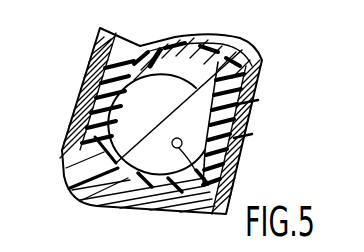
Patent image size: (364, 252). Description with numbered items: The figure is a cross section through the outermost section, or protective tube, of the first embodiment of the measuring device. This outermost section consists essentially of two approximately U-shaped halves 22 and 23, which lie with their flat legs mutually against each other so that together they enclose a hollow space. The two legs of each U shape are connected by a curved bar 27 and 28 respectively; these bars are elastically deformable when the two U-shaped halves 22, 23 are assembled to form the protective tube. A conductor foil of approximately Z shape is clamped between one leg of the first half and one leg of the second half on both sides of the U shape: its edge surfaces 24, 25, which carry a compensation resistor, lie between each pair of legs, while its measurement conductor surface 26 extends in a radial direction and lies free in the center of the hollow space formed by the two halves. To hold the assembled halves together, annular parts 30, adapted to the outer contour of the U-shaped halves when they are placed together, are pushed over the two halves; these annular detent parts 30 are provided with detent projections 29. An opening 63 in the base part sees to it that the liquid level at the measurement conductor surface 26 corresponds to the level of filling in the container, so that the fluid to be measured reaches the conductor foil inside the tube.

The U-shaped half 22 is at (83, 149).
The U-shaped half 23 is at (257, 67).
The edge surface 24 is at (92, 62).
The edge surface 25 is at (257, 110).
The measurement conductor surface 26 is at (195, 50).
The curved bar 27 is at (170, 58).
The curved bar 28 is at (163, 201).
The detent projection 29 is at (87, 97).
The annular part 30 is at (95, 204).
The opening 63 is at (199, 205).